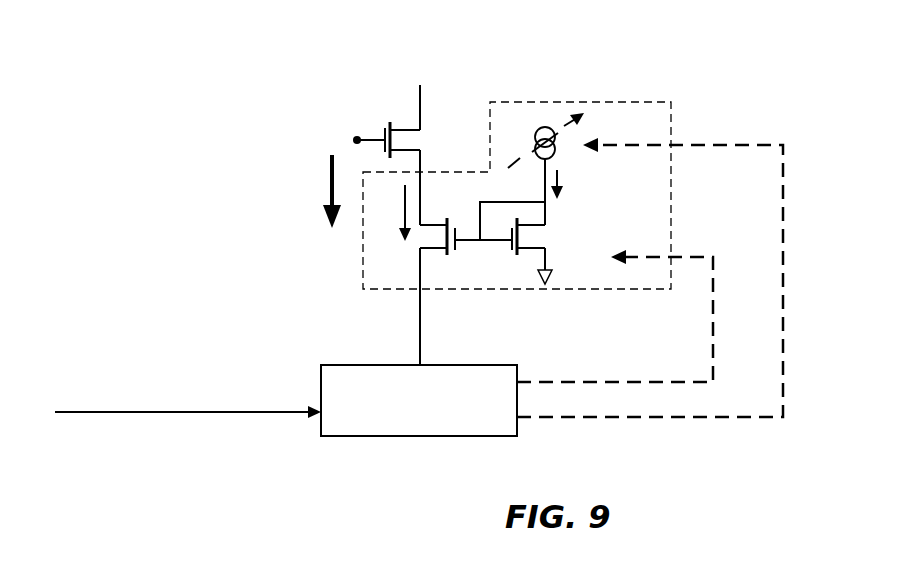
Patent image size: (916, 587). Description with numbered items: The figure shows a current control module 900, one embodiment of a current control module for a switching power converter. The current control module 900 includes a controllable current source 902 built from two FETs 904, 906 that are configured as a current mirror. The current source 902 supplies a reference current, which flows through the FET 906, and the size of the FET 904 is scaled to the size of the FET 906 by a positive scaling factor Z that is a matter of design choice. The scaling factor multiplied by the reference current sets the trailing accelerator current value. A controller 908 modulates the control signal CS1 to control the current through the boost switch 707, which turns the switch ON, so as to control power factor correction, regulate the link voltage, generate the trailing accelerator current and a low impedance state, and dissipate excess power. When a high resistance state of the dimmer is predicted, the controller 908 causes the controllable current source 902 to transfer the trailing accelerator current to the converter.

The current control module 900 is at (840, 104).
The switch 707 is at (386, 131).
The controllable current source 902 is at (672, 233).
The FET 904 is at (423, 223).
The FET 906 is at (526, 229).
The controller 908 is at (538, 134).